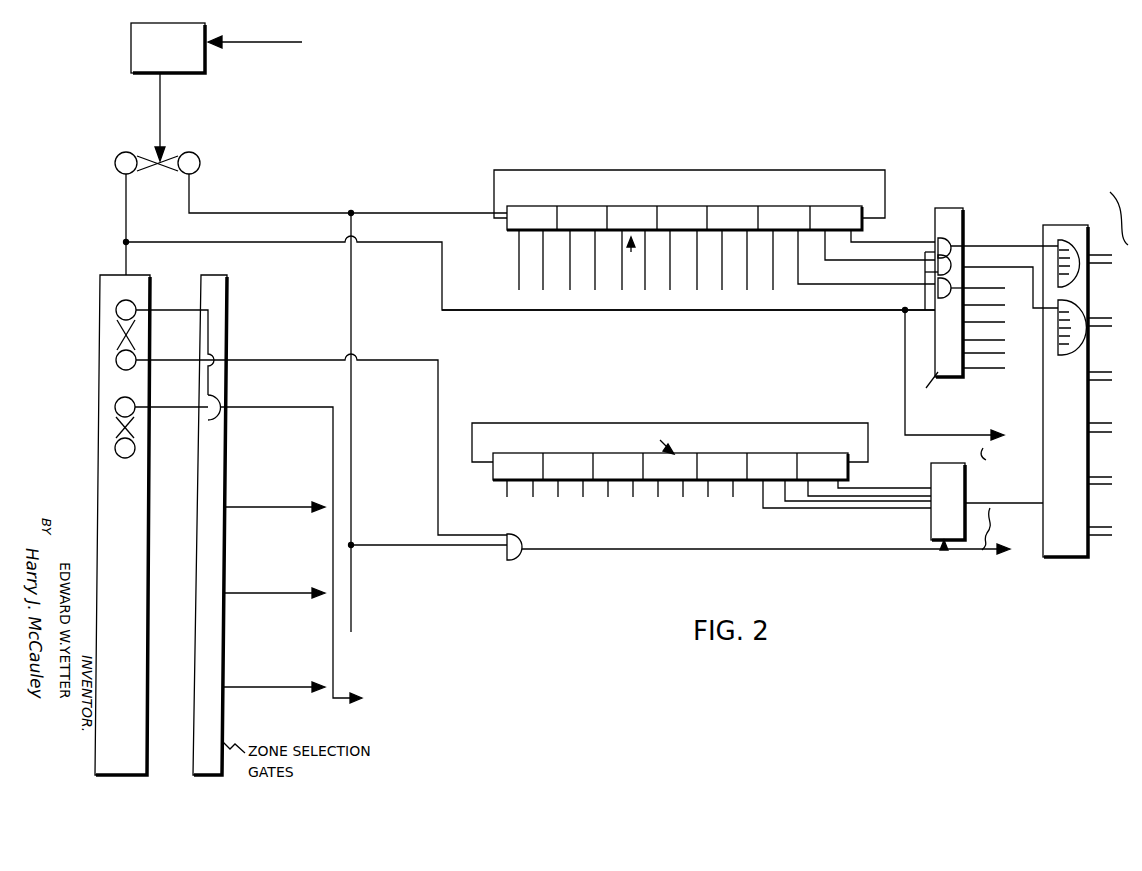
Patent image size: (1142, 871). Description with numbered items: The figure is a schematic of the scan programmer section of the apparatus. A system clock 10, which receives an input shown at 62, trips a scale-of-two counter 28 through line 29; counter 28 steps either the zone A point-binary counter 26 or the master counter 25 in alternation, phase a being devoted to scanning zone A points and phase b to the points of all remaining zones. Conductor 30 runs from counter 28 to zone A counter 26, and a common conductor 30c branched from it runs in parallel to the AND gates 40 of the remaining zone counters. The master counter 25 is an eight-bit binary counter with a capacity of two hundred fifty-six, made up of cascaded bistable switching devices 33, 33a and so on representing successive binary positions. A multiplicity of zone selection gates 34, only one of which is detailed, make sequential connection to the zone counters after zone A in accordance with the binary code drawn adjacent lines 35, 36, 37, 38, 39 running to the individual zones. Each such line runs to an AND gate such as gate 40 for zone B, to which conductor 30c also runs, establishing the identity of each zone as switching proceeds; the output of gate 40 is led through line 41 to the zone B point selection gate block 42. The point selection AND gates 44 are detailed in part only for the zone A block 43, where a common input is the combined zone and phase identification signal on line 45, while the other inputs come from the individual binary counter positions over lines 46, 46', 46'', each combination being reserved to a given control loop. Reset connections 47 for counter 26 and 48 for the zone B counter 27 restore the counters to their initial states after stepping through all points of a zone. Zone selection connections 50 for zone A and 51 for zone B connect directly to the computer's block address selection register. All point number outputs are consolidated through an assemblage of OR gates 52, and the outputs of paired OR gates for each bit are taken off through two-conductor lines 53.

The system clock 10 is at (132, 62).
The clock input line 62 is at (265, 47).
The line 29 is at (163, 96).
The scale-of-two counter 28 is at (125, 156).
The conductor 30 is at (237, 213).
The common conductor 30c is at (400, 291).
The master counter 25 is at (101, 485).
The bistable switching device 33 is at (118, 332).
The bistable switching device 33a is at (117, 411).
The zone selection gate 34 is at (207, 423).
The line 35 is at (303, 366).
The line 36 is at (285, 416).
The line 37 is at (268, 515).
The line 38 is at (267, 596).
The line 39 is at (266, 690).
The reset connection 47 is at (838, 170).
The zone A point-binary counter 26 is at (640, 276).
The line 46 is at (893, 235).
The line 46' is at (880, 248).
The line 46'' is at (866, 258).
The line 45 is at (640, 313).
The zone A point selection gate block 43 is at (935, 343).
The point selection AND gate 44 is at (957, 283).
The zone selection connection 50 is at (942, 438).
The reset connection 48 is at (804, 426).
The zone B point-binary counter 27 is at (656, 445).
The AND gate 40 is at (521, 539).
The line 41 is at (765, 557).
The point selection gate block 42 is at (930, 527).
The zone selection connection 51 is at (955, 552).
The OR gate 52 is at (1076, 242).
The two-conductor line 53 is at (1115, 393).